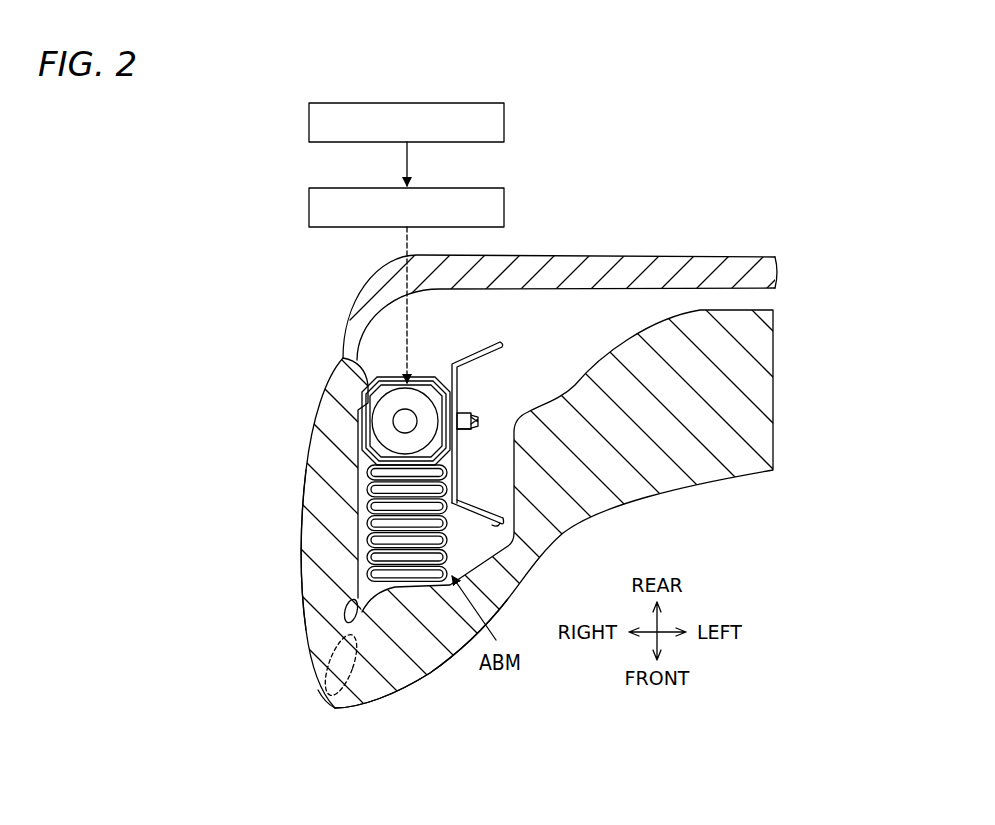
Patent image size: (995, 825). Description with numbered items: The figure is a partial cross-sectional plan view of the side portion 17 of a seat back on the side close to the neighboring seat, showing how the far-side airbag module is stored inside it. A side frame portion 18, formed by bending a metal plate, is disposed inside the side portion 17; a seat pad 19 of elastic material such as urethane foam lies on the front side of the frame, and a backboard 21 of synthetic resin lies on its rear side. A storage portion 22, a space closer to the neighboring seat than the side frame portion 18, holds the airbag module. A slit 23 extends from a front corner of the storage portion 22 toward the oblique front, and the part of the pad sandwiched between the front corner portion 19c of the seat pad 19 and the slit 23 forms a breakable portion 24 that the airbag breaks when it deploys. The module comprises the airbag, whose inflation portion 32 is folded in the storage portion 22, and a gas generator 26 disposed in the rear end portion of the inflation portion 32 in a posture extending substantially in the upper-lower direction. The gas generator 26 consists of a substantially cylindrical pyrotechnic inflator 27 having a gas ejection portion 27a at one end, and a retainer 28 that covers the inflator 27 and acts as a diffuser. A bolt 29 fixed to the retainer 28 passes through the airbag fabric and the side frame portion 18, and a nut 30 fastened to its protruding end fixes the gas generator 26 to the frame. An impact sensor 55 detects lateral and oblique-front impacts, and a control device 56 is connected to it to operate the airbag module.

The impact sensor 55 is at (505, 121).
The control device 56 is at (505, 207).
The backboard 21 is at (662, 267).
The seat pad 19 is at (600, 500).
The side portion 17 is at (431, 657).
The front corner portion 19c is at (328, 706).
The inflation portion 32 is at (358, 535).
The slit 23 is at (346, 618).
The breakable portion 24 is at (318, 676).
The gas generator 26 is at (334, 397).
The inflator 27 is at (363, 412).
The retainer 28 is at (368, 428).
The gas ejection portion 27a is at (411, 412).
The storage portion 22 is at (366, 488).
The side frame portion 18 is at (474, 352).
The bolt 29 is at (476, 418).
The nut 30 is at (462, 433).